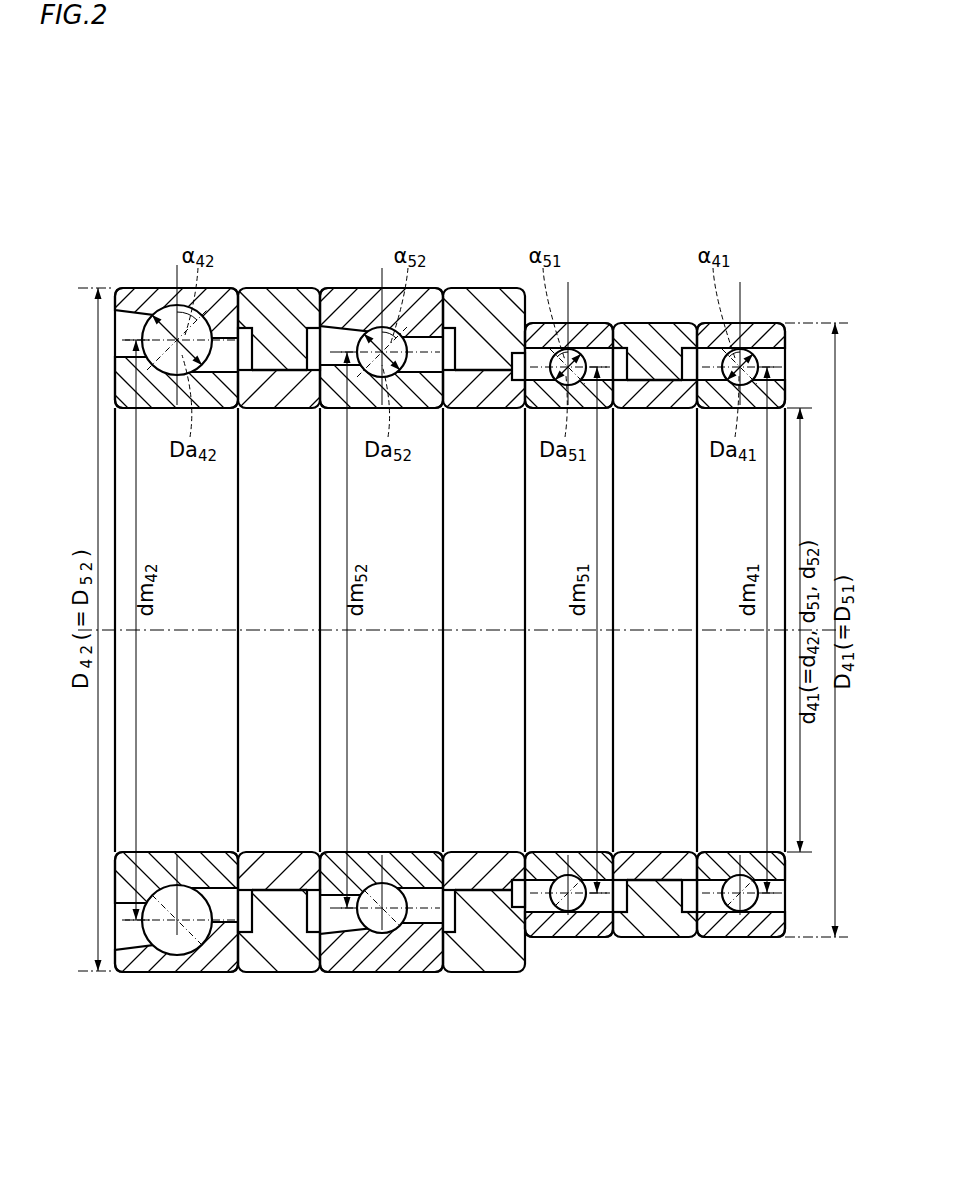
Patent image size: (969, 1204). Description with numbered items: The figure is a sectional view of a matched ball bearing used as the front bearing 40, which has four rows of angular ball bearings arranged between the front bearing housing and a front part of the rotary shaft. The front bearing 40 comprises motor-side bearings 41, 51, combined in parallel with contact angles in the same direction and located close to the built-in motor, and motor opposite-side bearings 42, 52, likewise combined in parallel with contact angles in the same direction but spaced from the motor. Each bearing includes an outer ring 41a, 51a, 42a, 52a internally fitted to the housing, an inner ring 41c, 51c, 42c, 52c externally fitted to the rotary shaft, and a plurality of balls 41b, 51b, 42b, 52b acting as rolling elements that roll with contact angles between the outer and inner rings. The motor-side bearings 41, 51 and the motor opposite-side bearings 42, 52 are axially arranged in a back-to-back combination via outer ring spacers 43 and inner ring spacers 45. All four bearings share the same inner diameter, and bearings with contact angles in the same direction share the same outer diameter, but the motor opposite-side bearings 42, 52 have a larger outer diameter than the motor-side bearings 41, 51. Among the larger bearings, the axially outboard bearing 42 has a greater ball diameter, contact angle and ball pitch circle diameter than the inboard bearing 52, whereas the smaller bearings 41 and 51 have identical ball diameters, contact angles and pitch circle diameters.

The front bearing 40 is at (596, 172).
The motor-side bearing 41 is at (741, 645).
The motor opposite-side bearing 42 is at (177, 648).
The motor-side bearing 51 is at (570, 645).
The motor opposite-side bearing 52 is at (380, 648).
The outer ring spacer 43 is at (463, 666).
The inner ring spacer 45 is at (277, 866).
The outer ring 41a is at (763, 925).
The ball 41b is at (748, 923).
The inner ring 41c is at (713, 925).
The outer ring 42a is at (148, 965).
The ball 42b is at (173, 940).
The inner ring 42c is at (225, 945).
The outer ring 51a is at (593, 932).
The ball 51b is at (578, 923).
The inner ring 51c is at (542, 925).
The outer ring 52a is at (350, 953).
The ball 52b is at (377, 937).
The inner ring 52c is at (423, 945).